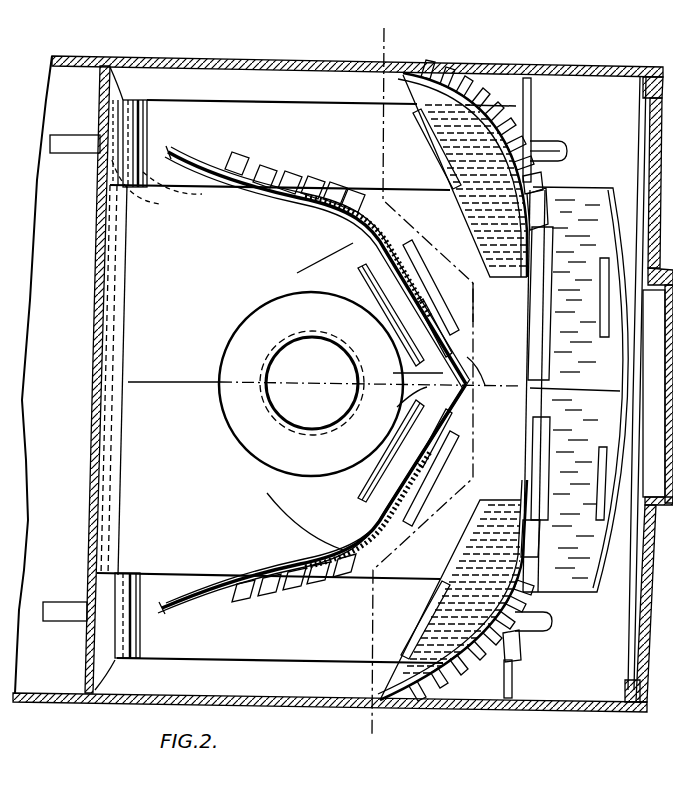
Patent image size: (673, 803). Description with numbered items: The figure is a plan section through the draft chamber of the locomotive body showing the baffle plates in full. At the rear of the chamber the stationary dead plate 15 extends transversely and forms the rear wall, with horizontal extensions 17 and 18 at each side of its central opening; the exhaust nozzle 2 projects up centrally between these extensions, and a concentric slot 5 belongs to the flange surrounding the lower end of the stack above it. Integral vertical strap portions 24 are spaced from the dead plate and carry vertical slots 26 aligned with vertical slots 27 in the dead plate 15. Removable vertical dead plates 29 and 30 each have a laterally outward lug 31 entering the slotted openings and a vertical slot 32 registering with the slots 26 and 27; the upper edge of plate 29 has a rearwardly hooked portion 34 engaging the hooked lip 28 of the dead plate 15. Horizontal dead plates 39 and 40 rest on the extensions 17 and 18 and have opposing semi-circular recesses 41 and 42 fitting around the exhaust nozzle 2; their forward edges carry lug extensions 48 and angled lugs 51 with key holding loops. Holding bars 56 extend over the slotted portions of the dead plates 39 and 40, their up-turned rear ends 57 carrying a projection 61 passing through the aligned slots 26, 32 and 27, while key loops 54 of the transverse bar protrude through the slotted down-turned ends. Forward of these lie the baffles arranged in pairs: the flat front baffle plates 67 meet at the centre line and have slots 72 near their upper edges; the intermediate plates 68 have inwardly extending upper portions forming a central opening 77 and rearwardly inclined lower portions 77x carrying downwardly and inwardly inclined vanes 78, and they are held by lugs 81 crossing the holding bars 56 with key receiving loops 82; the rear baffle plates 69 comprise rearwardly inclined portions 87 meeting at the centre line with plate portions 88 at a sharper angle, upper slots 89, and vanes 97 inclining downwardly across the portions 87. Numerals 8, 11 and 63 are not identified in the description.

The exhaust nozzle 2 is at (312, 383).
The concentric slot 5 is at (546, 673).
The section line 8- 8 is at (418, 381).
The housing 11 is at (44, 704).
The stationary dead plate 15 is at (100, 357).
The horizontal extension 17 is at (257, 78).
The horizontal extension 18 is at (310, 695).
The vertical strap portion 24 is at (132, 100).
The vertical slot 26 is at (273, 382).
The vertical slot 27 is at (100, 186).
The hooked lip 28 is at (122, 305).
The removable vertical dead plate 29 is at (128, 262).
The removable vertical dead plate 30 is at (120, 489).
The lug 31 is at (152, 115).
The vertical slot 32 is at (157, 191).
The rearwardly hooked portion 34 is at (118, 337).
The horizontal dead plate 39 is at (300, 266).
The horizontal dead plate 40 is at (270, 493).
The semi-circular recess 41 is at (312, 337).
The semi-circular recess 42 is at (311, 384).
The lug extension 48 is at (520, 298).
The lug 51 is at (356, 280).
The key loop 54 is at (540, 146).
The holding bar 56 is at (305, 112).
The up-turned rear end 57 is at (143, 108).
The projection 61 is at (68, 142).
The support bar 63 is at (530, 118).
The front baffle plate 67 is at (568, 395).
The intermediate baffle plate 68 is at (555, 400).
The rear baffle plate 69 is at (440, 379).
The slot 72 is at (605, 298).
The central opening 77 is at (490, 296).
The lower portion 77x is at (485, 218).
The vane 78 is at (547, 188).
The lug 81 is at (436, 147).
The key receiving loop 82 is at (440, 72).
The rearwardly inclined portion 87 is at (306, 396).
The plate portion 88 is at (262, 215).
The upper slot 89 is at (484, 372).
The vane 97 is at (413, 265).